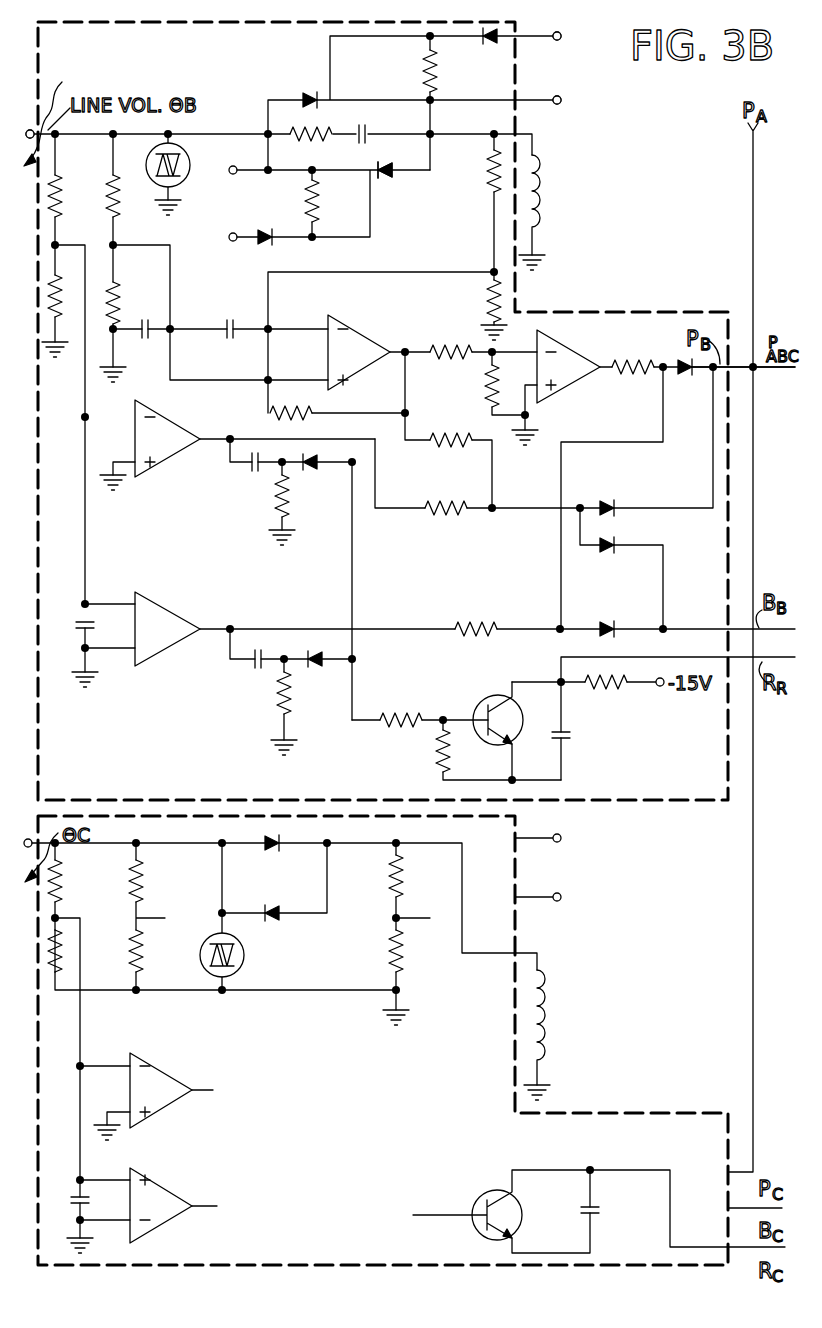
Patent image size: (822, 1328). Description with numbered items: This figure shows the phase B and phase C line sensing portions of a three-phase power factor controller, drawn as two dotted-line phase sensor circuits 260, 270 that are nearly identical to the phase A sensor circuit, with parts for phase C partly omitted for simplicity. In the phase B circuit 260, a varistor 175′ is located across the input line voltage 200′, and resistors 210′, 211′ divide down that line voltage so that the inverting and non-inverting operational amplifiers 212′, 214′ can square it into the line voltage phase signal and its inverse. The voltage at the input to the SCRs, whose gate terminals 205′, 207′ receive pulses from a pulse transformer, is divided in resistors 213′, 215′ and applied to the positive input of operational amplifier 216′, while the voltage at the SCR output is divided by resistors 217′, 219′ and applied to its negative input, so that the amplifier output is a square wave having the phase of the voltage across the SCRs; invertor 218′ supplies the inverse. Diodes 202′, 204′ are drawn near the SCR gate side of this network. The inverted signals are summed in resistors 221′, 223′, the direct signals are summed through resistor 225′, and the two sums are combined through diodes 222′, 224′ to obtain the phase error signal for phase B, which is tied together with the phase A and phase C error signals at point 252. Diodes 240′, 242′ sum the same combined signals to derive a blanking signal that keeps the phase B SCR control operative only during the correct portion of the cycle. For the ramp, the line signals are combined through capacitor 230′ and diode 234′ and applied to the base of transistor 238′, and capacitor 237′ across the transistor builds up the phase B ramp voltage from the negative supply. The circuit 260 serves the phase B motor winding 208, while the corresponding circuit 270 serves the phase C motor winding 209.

The phase sensor circuit 260 is at (200, 25).
The input line voltage 200′ is at (58, 111).
The resistor 210′ is at (58, 185).
The resistor 211′ is at (70, 247).
The resistor 213′ is at (117, 206).
The resistor 215′ is at (117, 288).
The varistor 175′ is at (188, 160).
The SCR gate terminals 207′ is at (226, 196).
The diode 202′ is at (305, 94).
The diode 204′ is at (390, 180).
The resistor 217′ is at (490, 180).
The resistor 219′ is at (490, 300).
The SCR gate terminals 205′ is at (557, 42).
The phase B motor winding 208 is at (540, 186).
The operational amplifier 216′ is at (338, 316).
The invertor 218′ is at (564, 397).
The resistor 225′ is at (630, 366).
The diode 222′ is at (682, 374).
The point 252 is at (754, 369).
The resistor 221′ is at (456, 442).
The resistor 223′ is at (444, 512).
The diode 224′ is at (602, 500).
The diode 240′ is at (600, 549).
The diode 242′ is at (604, 626).
The inverting operational amplifier 212′ is at (146, 474).
The non-inverting operational amplifier 214′ is at (152, 668).
The capacitor 230′ is at (246, 474).
The diode 234′ is at (292, 480).
The transistor 238′ is at (480, 698).
The capacitor 237′ is at (564, 738).
The phase sensor circuit 270 is at (514, 1024).
The phase C motor winding 209 is at (544, 1016).